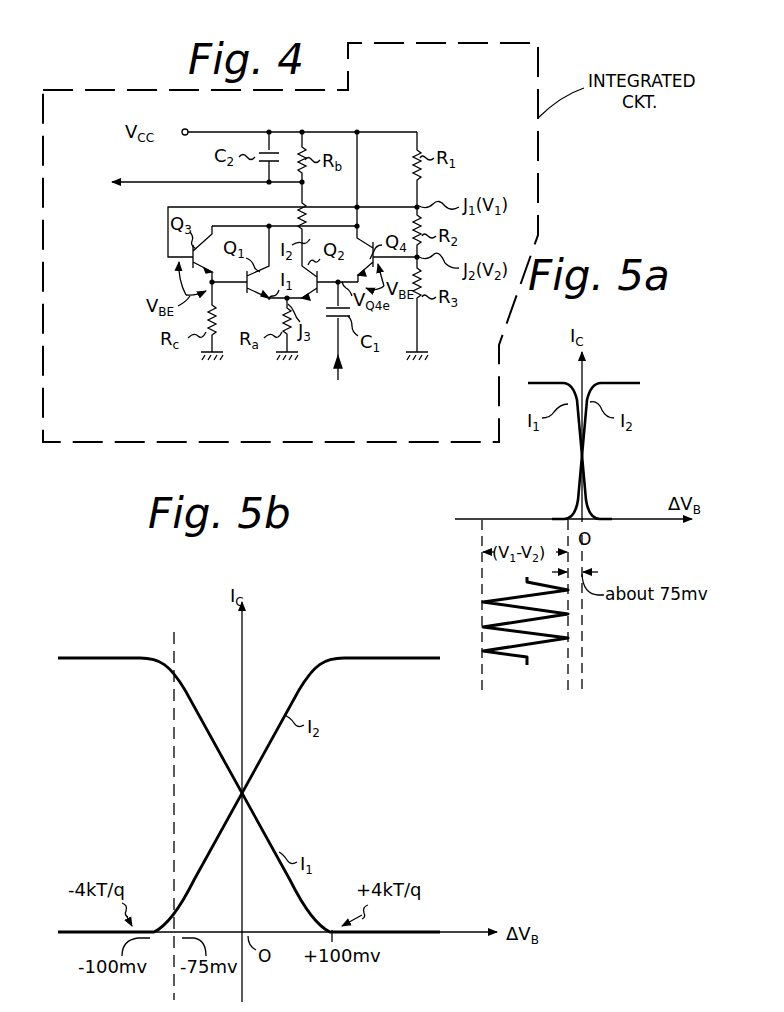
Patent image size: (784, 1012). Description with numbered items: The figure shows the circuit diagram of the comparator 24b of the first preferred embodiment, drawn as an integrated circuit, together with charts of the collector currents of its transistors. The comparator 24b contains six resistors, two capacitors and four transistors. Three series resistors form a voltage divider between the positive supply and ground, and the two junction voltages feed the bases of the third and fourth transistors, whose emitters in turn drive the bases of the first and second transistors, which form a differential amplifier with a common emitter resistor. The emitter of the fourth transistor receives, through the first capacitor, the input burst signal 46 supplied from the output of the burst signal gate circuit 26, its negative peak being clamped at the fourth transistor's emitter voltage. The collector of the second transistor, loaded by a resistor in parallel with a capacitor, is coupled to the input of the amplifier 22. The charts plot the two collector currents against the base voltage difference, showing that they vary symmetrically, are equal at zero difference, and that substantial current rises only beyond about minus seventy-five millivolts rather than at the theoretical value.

In FIG. 4, the comparator 24b is at (374, 117).
In FIG. 4, the amplifier 22 is at (178, 180).
In FIG. 4, the burst signal gate circuit 26 is at (322, 407).
In FIG. 5A, the input burst signal 46 is at (545, 650).